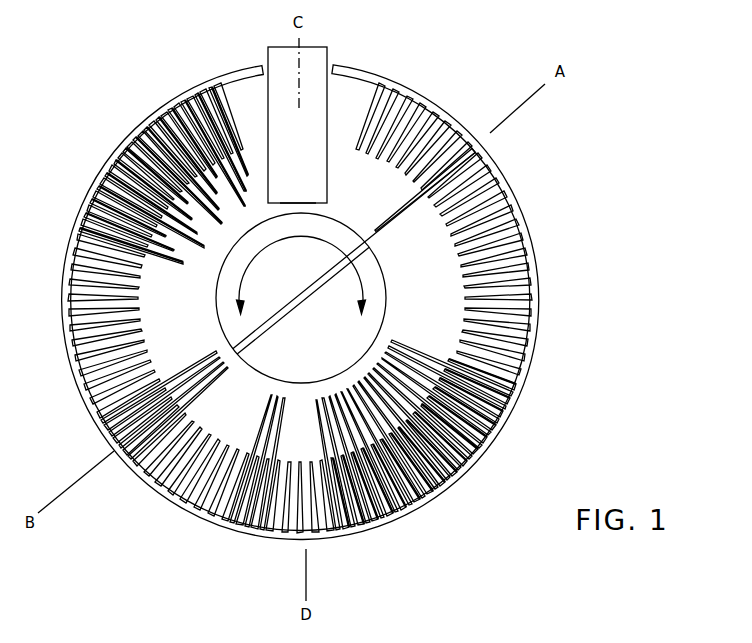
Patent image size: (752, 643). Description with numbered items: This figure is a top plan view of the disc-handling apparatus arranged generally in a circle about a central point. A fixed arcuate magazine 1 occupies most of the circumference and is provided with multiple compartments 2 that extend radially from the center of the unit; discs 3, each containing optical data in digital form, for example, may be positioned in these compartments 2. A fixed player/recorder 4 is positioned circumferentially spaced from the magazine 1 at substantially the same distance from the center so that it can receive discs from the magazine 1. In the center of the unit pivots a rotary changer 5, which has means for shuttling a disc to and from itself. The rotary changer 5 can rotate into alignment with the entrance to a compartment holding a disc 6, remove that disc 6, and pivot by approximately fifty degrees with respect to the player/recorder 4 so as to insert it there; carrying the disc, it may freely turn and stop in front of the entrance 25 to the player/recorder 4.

The fixed arcuate magazine 1 is at (513, 200).
The compartments 2 is at (528, 289).
The discs 3 is at (500, 432).
The fixed player/recorder 4 is at (322, 125).
The rotary changer 5 is at (222, 296).
The disc 6 is at (456, 156).
The entrance 25 is at (299, 199).